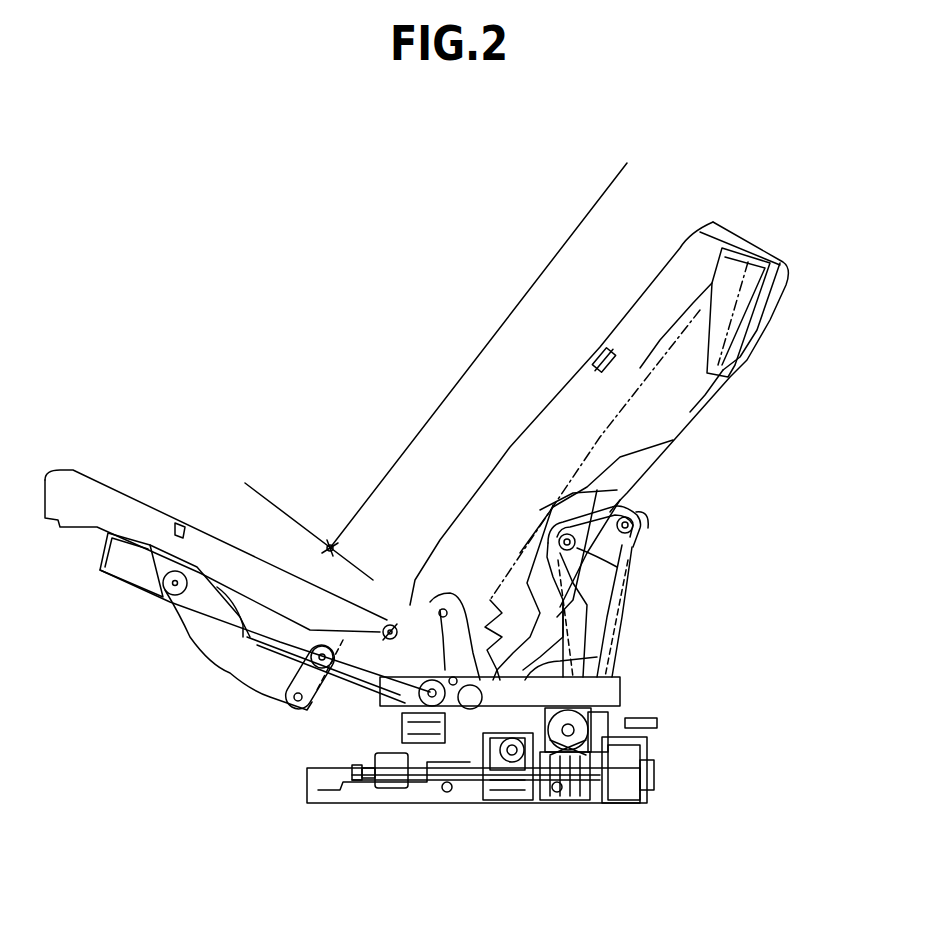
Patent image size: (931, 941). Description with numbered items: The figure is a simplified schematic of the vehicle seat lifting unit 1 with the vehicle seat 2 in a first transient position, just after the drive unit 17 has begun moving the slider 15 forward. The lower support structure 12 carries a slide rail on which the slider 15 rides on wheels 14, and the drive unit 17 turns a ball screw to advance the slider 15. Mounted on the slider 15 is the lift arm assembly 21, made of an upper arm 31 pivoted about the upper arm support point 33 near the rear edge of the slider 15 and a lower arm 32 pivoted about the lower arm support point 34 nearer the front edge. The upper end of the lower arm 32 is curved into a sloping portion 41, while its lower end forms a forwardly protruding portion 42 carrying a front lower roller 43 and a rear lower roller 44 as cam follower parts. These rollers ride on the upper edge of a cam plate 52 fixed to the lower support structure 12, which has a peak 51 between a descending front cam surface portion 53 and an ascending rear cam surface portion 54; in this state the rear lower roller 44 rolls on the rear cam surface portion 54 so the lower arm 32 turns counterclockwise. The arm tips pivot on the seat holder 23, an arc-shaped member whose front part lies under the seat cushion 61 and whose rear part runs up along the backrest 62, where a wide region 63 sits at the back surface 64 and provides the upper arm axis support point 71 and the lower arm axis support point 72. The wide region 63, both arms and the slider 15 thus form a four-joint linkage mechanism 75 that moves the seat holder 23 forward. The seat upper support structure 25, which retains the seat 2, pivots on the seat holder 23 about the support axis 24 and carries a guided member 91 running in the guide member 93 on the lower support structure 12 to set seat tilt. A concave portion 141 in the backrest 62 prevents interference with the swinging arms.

The vehicle seat lifting unit 1 is at (108, 308).
The vehicle seat 2 is at (770, 230).
The lower support structure 12 is at (383, 812).
The wheels 14 is at (447, 795).
The slider 15 is at (457, 812).
The drive unit 17 is at (433, 792).
The lift arm assembly 21 is at (730, 560).
The seat holder 23 is at (230, 673).
The support axis 24 is at (172, 596).
The seat upper support structure 25 is at (116, 578).
The upper arm 31 is at (651, 576).
The lower arm 32 is at (642, 618).
The upper arm support point 33 is at (572, 805).
The lower arm support point 34 is at (510, 802).
The sloping portion 41 is at (600, 505).
The forwardly protruding portion 42 is at (485, 802).
The front lower roller 43 is at (435, 716).
The rear lower roller 44 is at (580, 676).
The peak 51 is at (493, 680).
The cam plate 52 is at (580, 688).
The front cam surface portion 53 is at (456, 747).
The rear cam surface portion 54 is at (640, 757).
The seat cushion 61 is at (207, 548).
The backrest 62 is at (712, 370).
The wide region 63 is at (610, 465).
The back surface 64 is at (695, 403).
The upper arm axis support point 71 is at (635, 527).
The lower arm axis support point 72 is at (578, 545).
The four-joint linkage mechanism 75 is at (663, 508).
The guided member 91 is at (395, 702).
The guide member 93 is at (405, 668).
The concave portion 141 is at (577, 498).